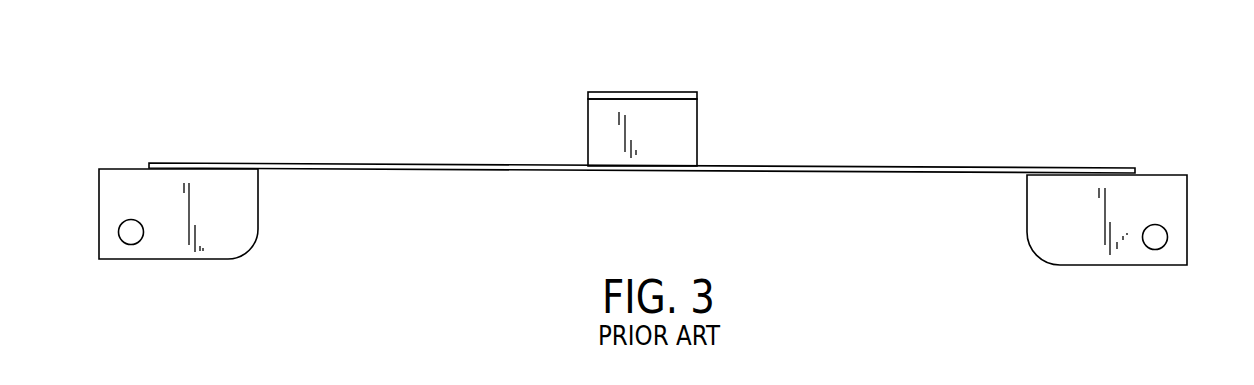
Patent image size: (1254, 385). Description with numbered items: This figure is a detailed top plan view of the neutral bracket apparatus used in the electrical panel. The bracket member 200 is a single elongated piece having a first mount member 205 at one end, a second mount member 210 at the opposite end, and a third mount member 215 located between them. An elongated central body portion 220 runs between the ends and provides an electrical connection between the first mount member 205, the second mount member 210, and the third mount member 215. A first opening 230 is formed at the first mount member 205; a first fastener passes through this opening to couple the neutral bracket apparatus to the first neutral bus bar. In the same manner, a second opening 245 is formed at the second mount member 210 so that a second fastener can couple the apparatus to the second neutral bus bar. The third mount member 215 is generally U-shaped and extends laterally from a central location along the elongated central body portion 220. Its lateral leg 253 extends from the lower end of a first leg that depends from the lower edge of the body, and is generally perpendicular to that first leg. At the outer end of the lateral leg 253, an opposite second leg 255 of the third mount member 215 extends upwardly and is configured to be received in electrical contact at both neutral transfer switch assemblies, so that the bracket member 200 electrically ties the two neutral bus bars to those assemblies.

The bracket member 200 is at (906, 123).
The first mount member 205 is at (212, 238).
The second mount member 210 is at (1131, 234).
The third mount member 215 is at (645, 93).
The elongated central body portion 220 is at (435, 199).
The first opening 230 is at (131, 235).
The second opening 245 is at (1155, 240).
The lateral leg 253 is at (603, 132).
The second leg 255 is at (644, 91).